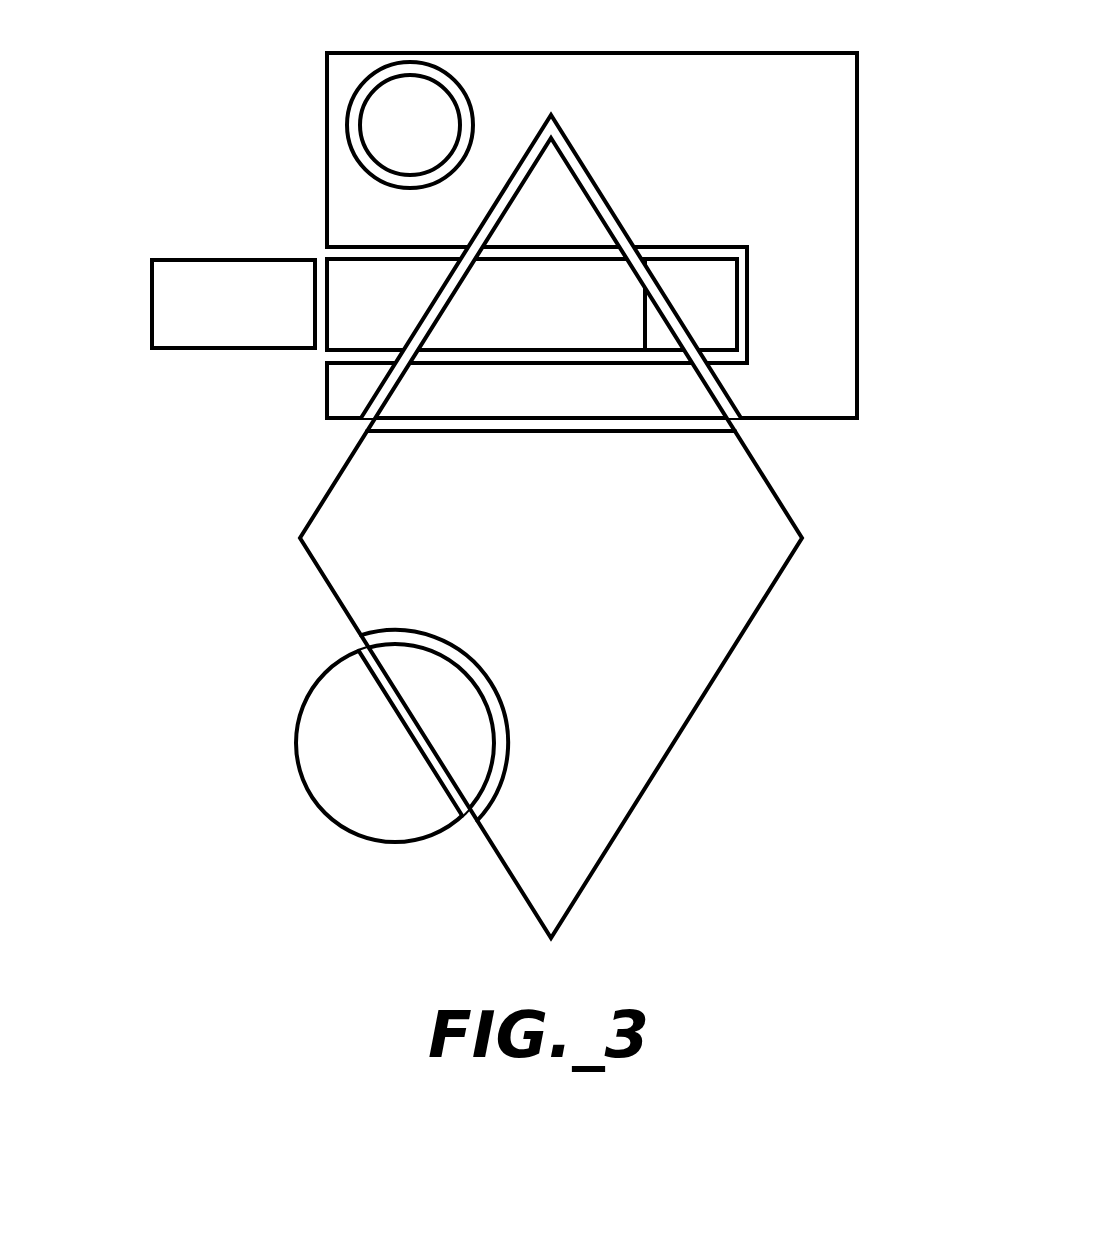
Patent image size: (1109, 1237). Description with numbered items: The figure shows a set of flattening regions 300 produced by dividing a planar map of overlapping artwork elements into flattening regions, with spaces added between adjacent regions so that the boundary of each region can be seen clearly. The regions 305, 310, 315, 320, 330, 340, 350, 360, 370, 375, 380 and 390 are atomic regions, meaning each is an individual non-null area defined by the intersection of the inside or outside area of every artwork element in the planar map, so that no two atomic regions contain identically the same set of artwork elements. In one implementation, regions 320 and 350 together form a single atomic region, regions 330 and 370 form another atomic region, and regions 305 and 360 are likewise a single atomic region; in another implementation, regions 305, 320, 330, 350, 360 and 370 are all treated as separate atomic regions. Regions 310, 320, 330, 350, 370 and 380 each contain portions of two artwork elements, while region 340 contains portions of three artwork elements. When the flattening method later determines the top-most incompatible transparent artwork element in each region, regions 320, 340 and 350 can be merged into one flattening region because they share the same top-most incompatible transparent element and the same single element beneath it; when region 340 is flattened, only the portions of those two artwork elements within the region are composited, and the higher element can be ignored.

The set of flattening regions 300 is at (175, 802).
The flattening region 305 is at (611, 53).
The flattening region 310 is at (355, 128).
The flattening region 315 is at (268, 258).
The flattening region 320 is at (327, 256).
The flattening region 330 is at (612, 213).
The flattening region 340 is at (648, 284).
The flattening region 350 is at (745, 328).
The flattening region 360 is at (327, 396).
The flattening region 370 is at (367, 430).
The flattening region 375 is at (302, 535).
The flattening region 380 is at (361, 638).
The flattening region 390 is at (304, 705).